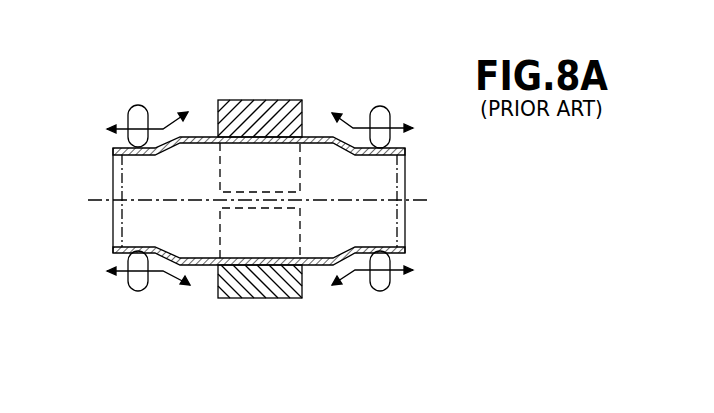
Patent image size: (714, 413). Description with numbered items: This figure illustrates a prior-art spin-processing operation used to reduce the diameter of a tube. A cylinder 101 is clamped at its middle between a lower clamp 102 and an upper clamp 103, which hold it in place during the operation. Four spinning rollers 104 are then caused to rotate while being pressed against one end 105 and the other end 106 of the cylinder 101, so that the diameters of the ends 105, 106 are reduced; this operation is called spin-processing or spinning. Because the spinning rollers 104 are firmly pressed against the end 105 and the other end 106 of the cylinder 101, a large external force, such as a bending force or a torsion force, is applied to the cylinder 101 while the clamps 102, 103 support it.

The cylinder 101 is at (320, 137).
The lower clamp 102 is at (268, 298).
The upper clamp 103 is at (265, 100).
The spinning rollers 104 is at (133, 104).
The one end 105 is at (135, 157).
The another end 106 is at (384, 155).